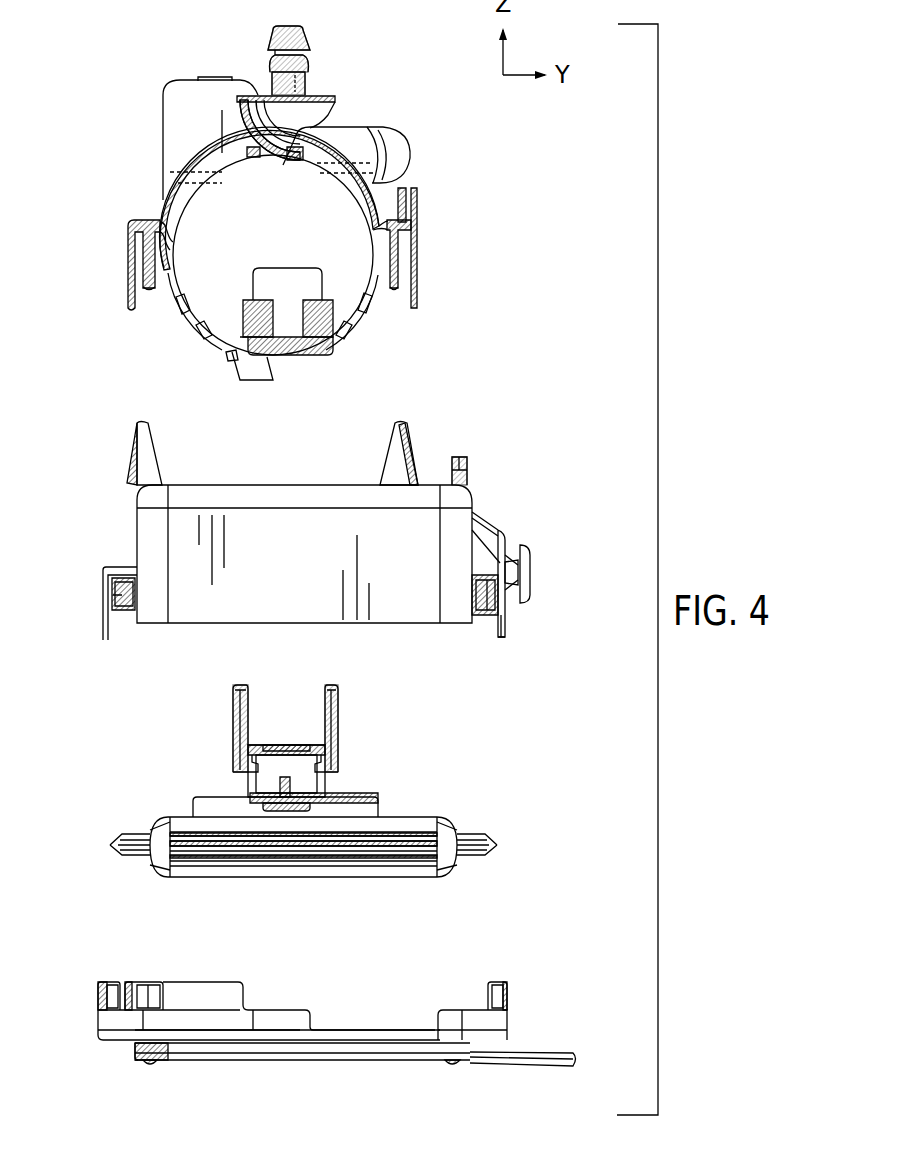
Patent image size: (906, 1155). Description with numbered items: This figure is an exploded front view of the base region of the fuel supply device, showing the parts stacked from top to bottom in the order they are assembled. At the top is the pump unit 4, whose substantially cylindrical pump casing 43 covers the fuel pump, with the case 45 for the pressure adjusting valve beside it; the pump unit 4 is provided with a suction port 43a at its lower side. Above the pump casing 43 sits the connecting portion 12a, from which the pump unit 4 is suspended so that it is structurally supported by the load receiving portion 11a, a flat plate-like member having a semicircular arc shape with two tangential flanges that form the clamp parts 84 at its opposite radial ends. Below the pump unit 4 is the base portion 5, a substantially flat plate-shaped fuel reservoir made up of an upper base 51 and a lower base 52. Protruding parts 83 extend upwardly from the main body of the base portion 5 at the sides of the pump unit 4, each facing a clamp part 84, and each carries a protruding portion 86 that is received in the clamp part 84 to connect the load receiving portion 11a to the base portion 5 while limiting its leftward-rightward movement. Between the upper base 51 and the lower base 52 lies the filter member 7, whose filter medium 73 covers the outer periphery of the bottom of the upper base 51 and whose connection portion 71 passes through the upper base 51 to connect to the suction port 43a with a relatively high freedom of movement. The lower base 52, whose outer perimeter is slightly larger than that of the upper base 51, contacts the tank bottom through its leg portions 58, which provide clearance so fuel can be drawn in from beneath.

The pump unit 4 is at (178, 325).
The pump casing 43 is at (160, 215).
The suction port 43a is at (303, 285).
The case for the pressure adjusting valve 45 is at (197, 113).
The load receiving portion 11a is at (205, 242).
The connecting portion 12a is at (323, 150).
The clamp part 84 is at (124, 244).
The base portion 5 is at (543, 512).
The upper base 51 is at (493, 482).
The protruding part 83 is at (145, 456).
The protruding portion 86 is at (128, 470).
The filter member 7 is at (462, 802).
The connection portion 71 is at (330, 780).
The filter medium 73 is at (182, 825).
The lower base 52 is at (520, 988).
The leg portion 58 is at (148, 1067).